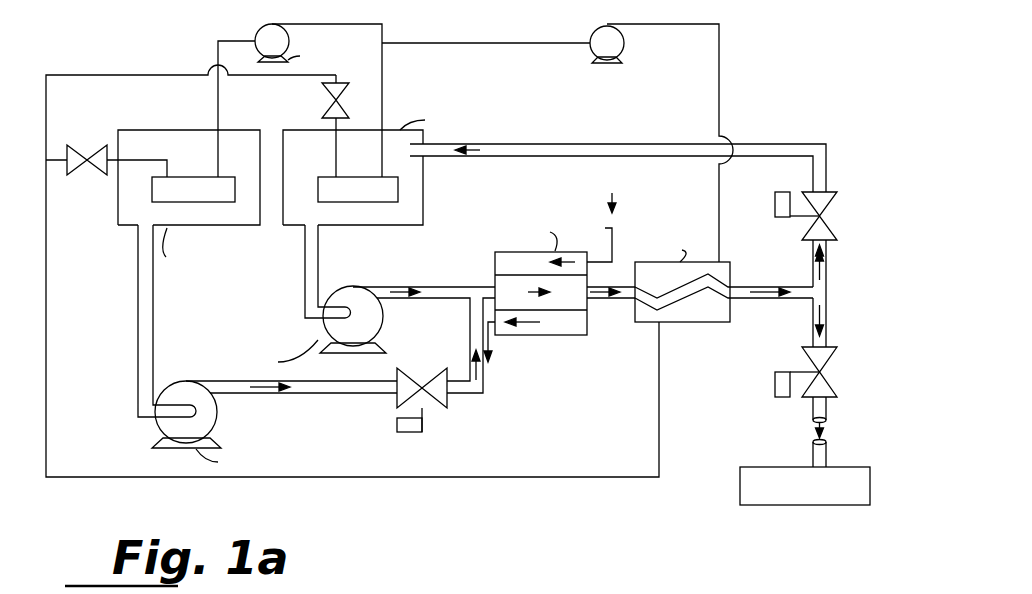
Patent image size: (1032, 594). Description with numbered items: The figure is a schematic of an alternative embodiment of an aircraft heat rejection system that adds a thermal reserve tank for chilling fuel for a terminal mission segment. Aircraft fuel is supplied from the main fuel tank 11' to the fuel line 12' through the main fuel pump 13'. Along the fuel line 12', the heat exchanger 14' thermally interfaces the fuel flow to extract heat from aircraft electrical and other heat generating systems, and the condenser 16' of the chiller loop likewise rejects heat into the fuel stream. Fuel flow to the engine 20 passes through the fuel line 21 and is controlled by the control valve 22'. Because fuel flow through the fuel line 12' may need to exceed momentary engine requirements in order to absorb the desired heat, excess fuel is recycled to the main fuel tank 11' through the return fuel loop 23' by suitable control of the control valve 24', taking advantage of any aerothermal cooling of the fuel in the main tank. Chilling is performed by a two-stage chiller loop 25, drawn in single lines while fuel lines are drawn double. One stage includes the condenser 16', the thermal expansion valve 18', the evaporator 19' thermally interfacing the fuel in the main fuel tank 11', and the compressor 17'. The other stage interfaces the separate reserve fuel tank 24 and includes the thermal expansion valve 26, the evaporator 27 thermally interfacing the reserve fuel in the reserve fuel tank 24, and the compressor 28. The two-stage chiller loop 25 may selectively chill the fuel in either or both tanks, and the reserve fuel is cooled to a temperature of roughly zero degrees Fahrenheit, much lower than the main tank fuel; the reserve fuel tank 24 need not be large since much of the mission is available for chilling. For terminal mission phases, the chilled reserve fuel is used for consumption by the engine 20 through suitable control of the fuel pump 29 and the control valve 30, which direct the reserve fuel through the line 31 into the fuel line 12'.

The two-stage chiller loop 25 is at (120, 75).
The compressor 28 is at (258, 31).
The compressor 17' is at (557, 132).
The thermal expansion valve 26 is at (84, 146).
The reserve fuel tank 24 is at (160, 210).
The evaporator 27 is at (181, 176).
The thermal expansion valve 18' is at (313, 126).
The main fuel tank 11' is at (431, 168).
The evaporator 19' is at (358, 176).
The return fuel loop 23' is at (618, 150).
The control valve 24' is at (829, 216).
The control valve 22' is at (827, 372).
The fuel line 21 is at (812, 410).
The engine 20 is at (847, 466).
The condenser 16' is at (680, 301).
The heat exchanger 14' is at (552, 275).
The fuel line 12' is at (424, 322).
The main fuel pump 13' is at (304, 297).
The fuel pump 29 is at (186, 381).
The line 31 is at (337, 394).
The control valve 30 is at (437, 406).